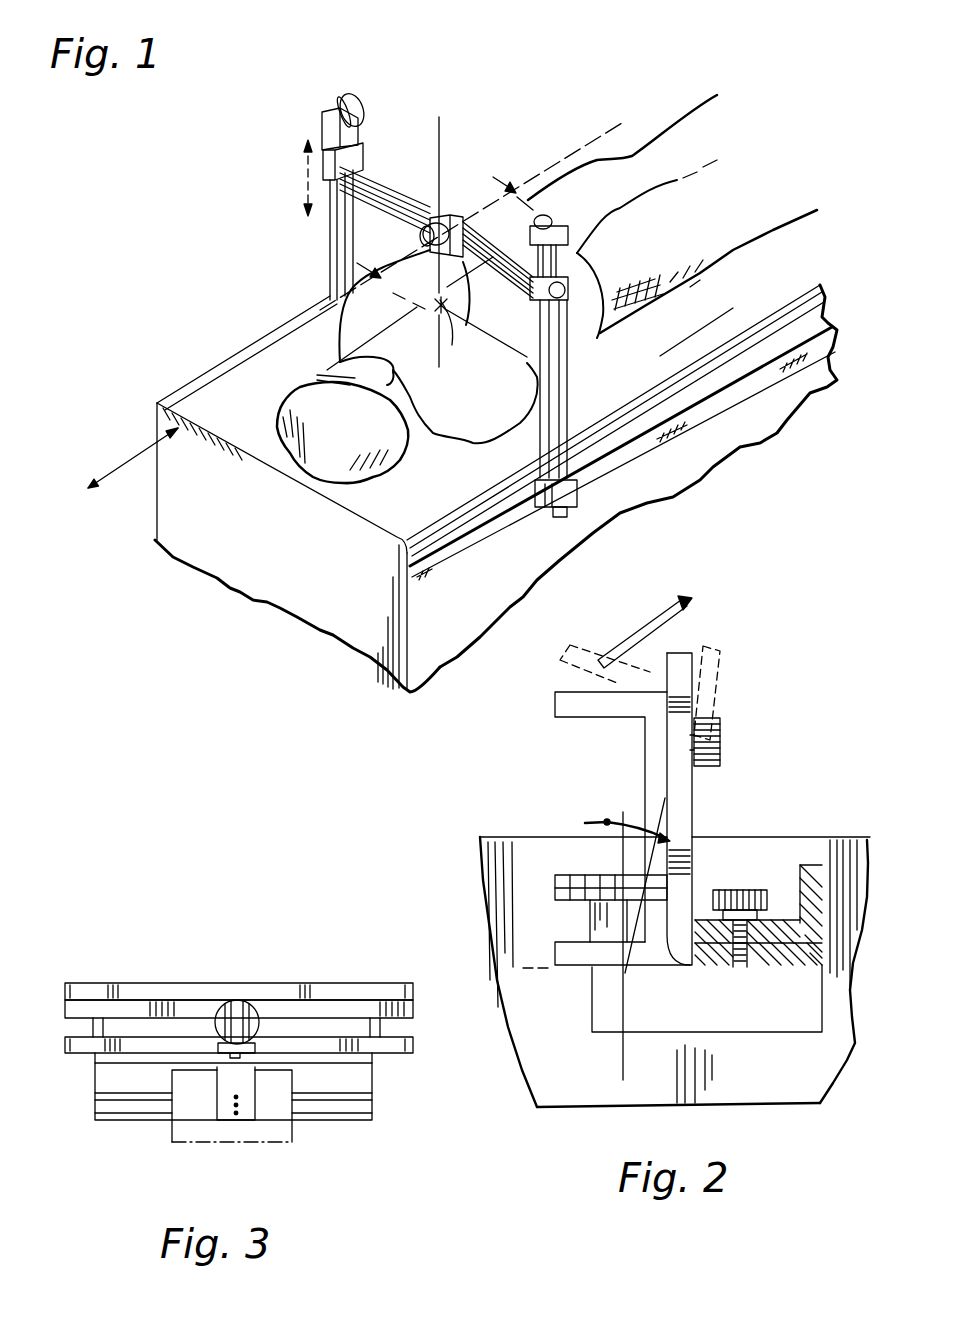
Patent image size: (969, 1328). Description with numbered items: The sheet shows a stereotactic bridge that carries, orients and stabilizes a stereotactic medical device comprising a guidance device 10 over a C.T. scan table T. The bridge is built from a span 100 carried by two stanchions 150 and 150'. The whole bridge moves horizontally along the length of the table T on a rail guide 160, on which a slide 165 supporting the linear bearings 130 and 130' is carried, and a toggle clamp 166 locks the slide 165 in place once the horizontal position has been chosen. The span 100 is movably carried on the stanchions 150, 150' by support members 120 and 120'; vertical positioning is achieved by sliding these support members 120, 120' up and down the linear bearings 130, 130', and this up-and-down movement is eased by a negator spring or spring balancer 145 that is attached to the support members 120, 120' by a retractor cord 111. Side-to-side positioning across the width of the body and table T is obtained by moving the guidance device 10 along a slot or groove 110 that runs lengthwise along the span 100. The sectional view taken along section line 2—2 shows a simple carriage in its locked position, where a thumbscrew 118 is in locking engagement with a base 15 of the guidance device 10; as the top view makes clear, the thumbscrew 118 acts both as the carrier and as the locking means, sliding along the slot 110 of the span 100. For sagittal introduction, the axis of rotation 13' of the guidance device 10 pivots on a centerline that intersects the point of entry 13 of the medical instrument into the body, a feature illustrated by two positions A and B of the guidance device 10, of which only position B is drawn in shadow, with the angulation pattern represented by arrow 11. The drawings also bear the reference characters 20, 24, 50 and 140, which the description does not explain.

In FIG. 1, the guidance device 10 is at (466, 325).
In FIG. 2, the guidance device 10 is at (685, 650).
In FIG. 2, the arrow 11 is at (627, 635).
In FIG. 2, the point of entry 13 is at (575, 946).
In FIG. 2, the axis of rotation 13' is at (615, 878).
In FIG. 2, the base 15 is at (773, 967).
In FIG. 3, the base 15 is at (182, 1022).
In FIG. 2, the support arm 20 is at (613, 723).
In FIG. 3, the support arm 20 is at (250, 1100).
In FIG. 2, the locking knob 24 is at (722, 735).
In FIG. 3, the base block 50 is at (203, 1110).
In FIG. 1, the span 100 is at (439, 132).
In FIG. 3, the span 100 is at (127, 984).
In FIG. 1, the slot/groove 110 is at (412, 185).
In FIG. 3, the slot/groove 110 is at (398, 1027).
In FIG. 1, the retractor cord 111 is at (338, 140).
In FIG. 2, the thumbscrew 118 is at (740, 893).
In FIG. 3, the thumbscrew 118 is at (258, 1002).
In FIG. 1, the support member 120 is at (547, 289).
In FIG. 1, the support member 120' is at (424, 200).
In FIG. 1, the linear bearing 130 is at (593, 346).
In FIG. 1, the linear bearing 130' is at (418, 277).
In FIG. 1, the marker mesh 140 is at (600, 277).
In FIG. 1, the negator spring or spring balancer 145 is at (385, 48).
In FIG. 1, the stanchion 150 is at (615, 420).
In FIG. 1, the stanchion 150' is at (247, 332).
In FIG. 1, the rail guide 160 is at (737, 398).
In FIG. 1, the slide 165 is at (593, 453).
In FIG. 1, the toggle clamp 166 is at (563, 517).
In FIG. 1, the section line 2 is at (471, 246).
In FIG. 1, the C.T. scan table T is at (195, 384).
In FIG. 2, the position of the guidance device A is at (553, 707).
In FIG. 2, the position of the guidance device B is at (563, 658).